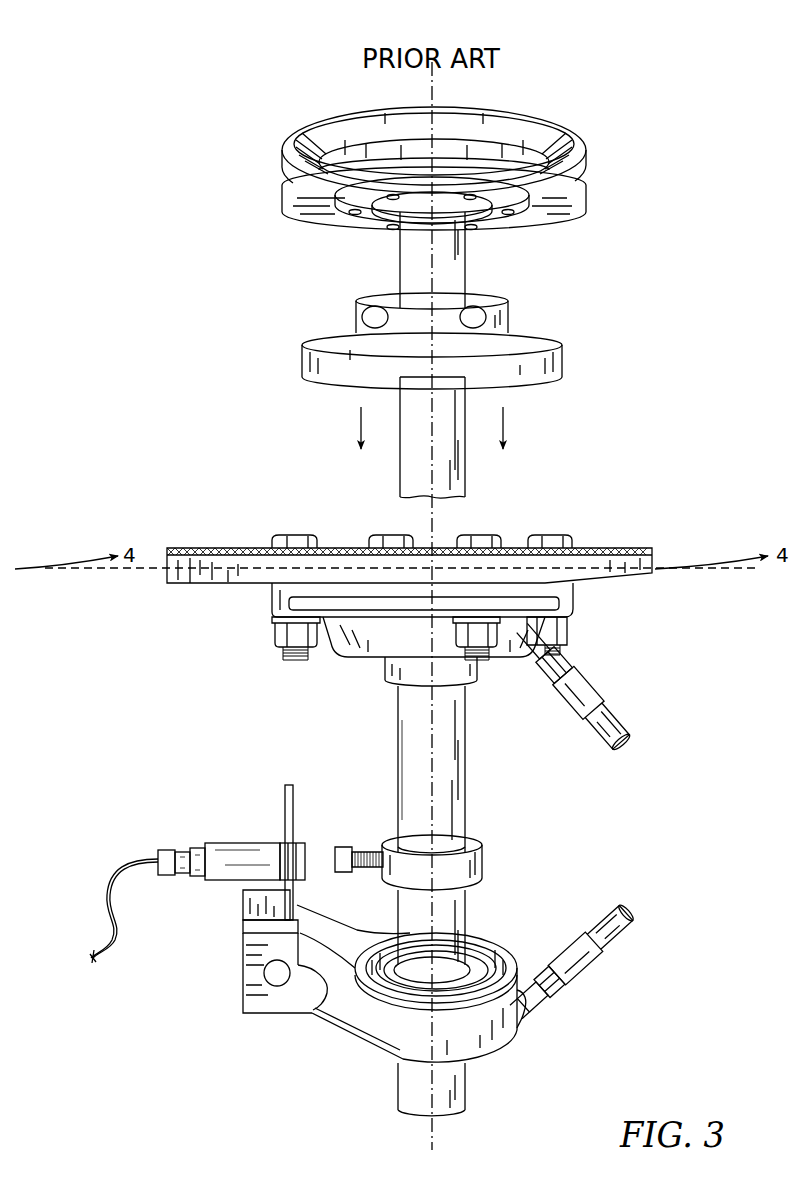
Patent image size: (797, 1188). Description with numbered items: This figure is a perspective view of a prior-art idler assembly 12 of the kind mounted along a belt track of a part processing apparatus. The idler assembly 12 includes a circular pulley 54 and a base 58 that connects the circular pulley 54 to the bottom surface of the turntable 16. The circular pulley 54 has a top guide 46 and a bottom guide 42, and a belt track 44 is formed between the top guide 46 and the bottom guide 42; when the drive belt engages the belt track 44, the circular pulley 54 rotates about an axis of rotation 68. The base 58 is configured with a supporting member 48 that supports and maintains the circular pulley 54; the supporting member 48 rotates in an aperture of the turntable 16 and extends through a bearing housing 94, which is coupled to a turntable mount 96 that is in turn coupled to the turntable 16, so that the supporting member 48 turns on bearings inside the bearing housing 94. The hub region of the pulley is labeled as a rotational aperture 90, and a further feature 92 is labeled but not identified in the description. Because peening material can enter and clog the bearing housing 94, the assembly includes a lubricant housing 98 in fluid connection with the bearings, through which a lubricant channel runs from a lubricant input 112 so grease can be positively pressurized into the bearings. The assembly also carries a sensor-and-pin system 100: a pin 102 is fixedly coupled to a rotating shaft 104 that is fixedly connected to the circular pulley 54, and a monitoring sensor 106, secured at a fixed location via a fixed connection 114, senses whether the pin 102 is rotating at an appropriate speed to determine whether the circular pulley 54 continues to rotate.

The idler assembly 12 is at (207, 102).
The turntable 16 is at (622, 547).
The bottom guide 42 is at (565, 213).
The belt track 44 is at (558, 156).
The top guide 46 is at (527, 118).
The supporting member 48 is at (415, 450).
The circular pulley 54 is at (591, 122).
The base 58 is at (553, 440).
The axis of rotation 68 is at (447, 745).
The rotational aperture 90 is at (393, 232).
The bolt hole 92 is at (508, 225).
The bearing housing 94 is at (438, 608).
The turntable mount 96 is at (568, 610).
The lubricant housing 98 is at (355, 645).
The sensor-and-pin system 100 is at (186, 908).
The pin 102 is at (342, 850).
The rotating shaft 104 is at (453, 800).
The monitoring sensor 106 is at (240, 860).
The lubricant input 112 is at (615, 722).
The fixed connection 114 is at (277, 986).